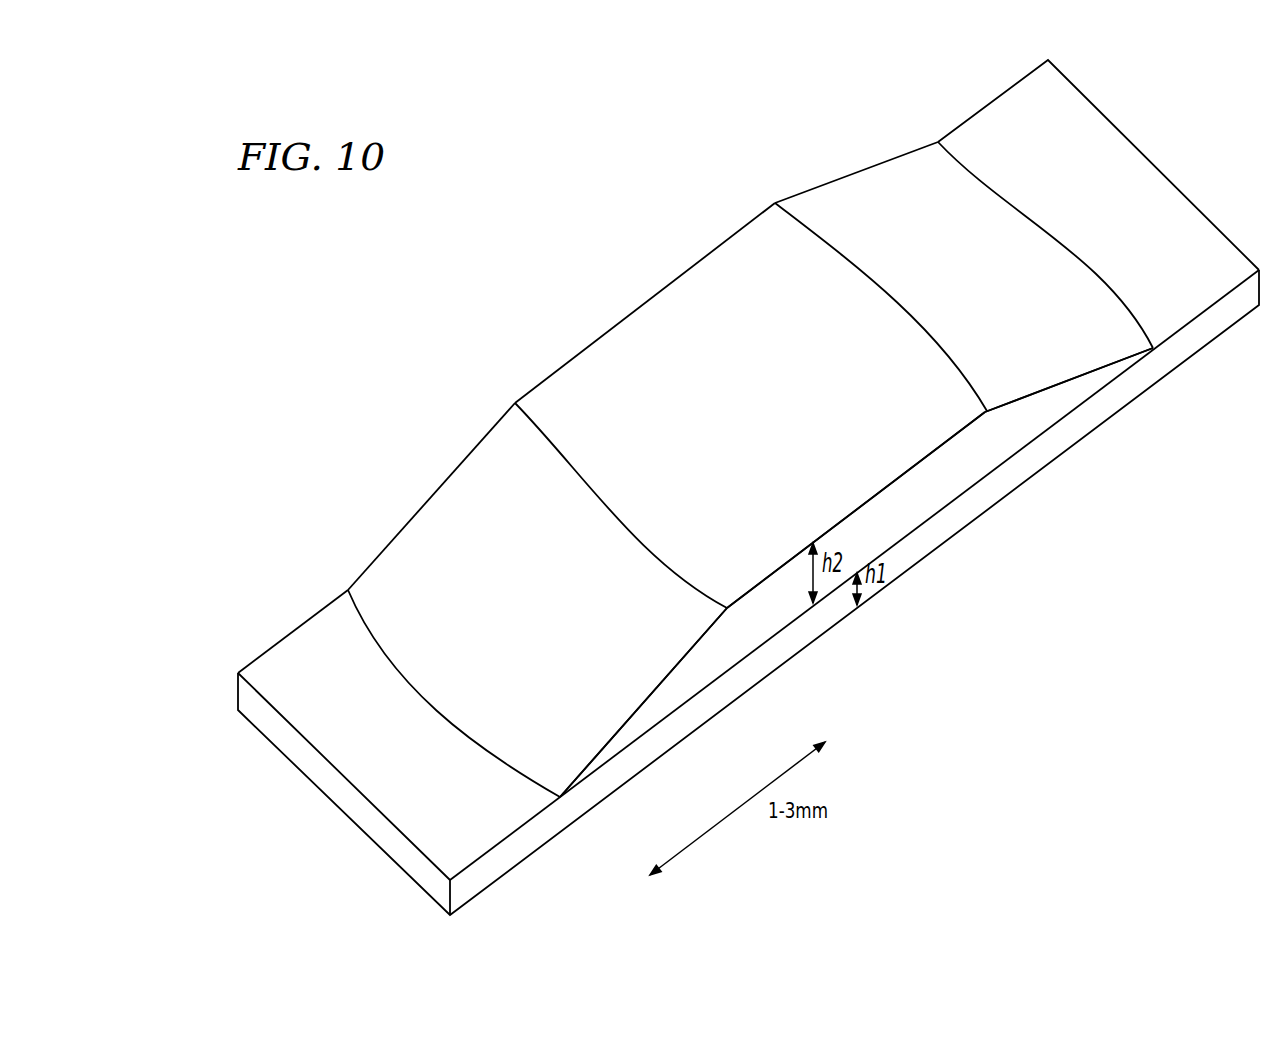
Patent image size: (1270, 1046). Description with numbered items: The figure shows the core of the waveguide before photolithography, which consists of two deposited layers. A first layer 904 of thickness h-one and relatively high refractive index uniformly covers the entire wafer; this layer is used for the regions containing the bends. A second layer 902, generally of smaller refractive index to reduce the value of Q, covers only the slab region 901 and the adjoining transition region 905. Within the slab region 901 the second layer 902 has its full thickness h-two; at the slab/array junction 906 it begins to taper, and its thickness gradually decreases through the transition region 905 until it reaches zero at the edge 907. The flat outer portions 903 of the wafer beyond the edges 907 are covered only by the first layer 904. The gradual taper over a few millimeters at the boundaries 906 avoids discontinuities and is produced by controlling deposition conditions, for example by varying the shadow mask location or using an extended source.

The slab region 901 is at (766, 418).
The second layer 902 is at (960, 463).
The flat end portions 903 is at (408, 753).
The wafer layer 904 is at (940, 523).
The transition region 905 is at (539, 624).
The slab/array junction 906 is at (660, 563).
The edge of transition region 907 is at (493, 755).